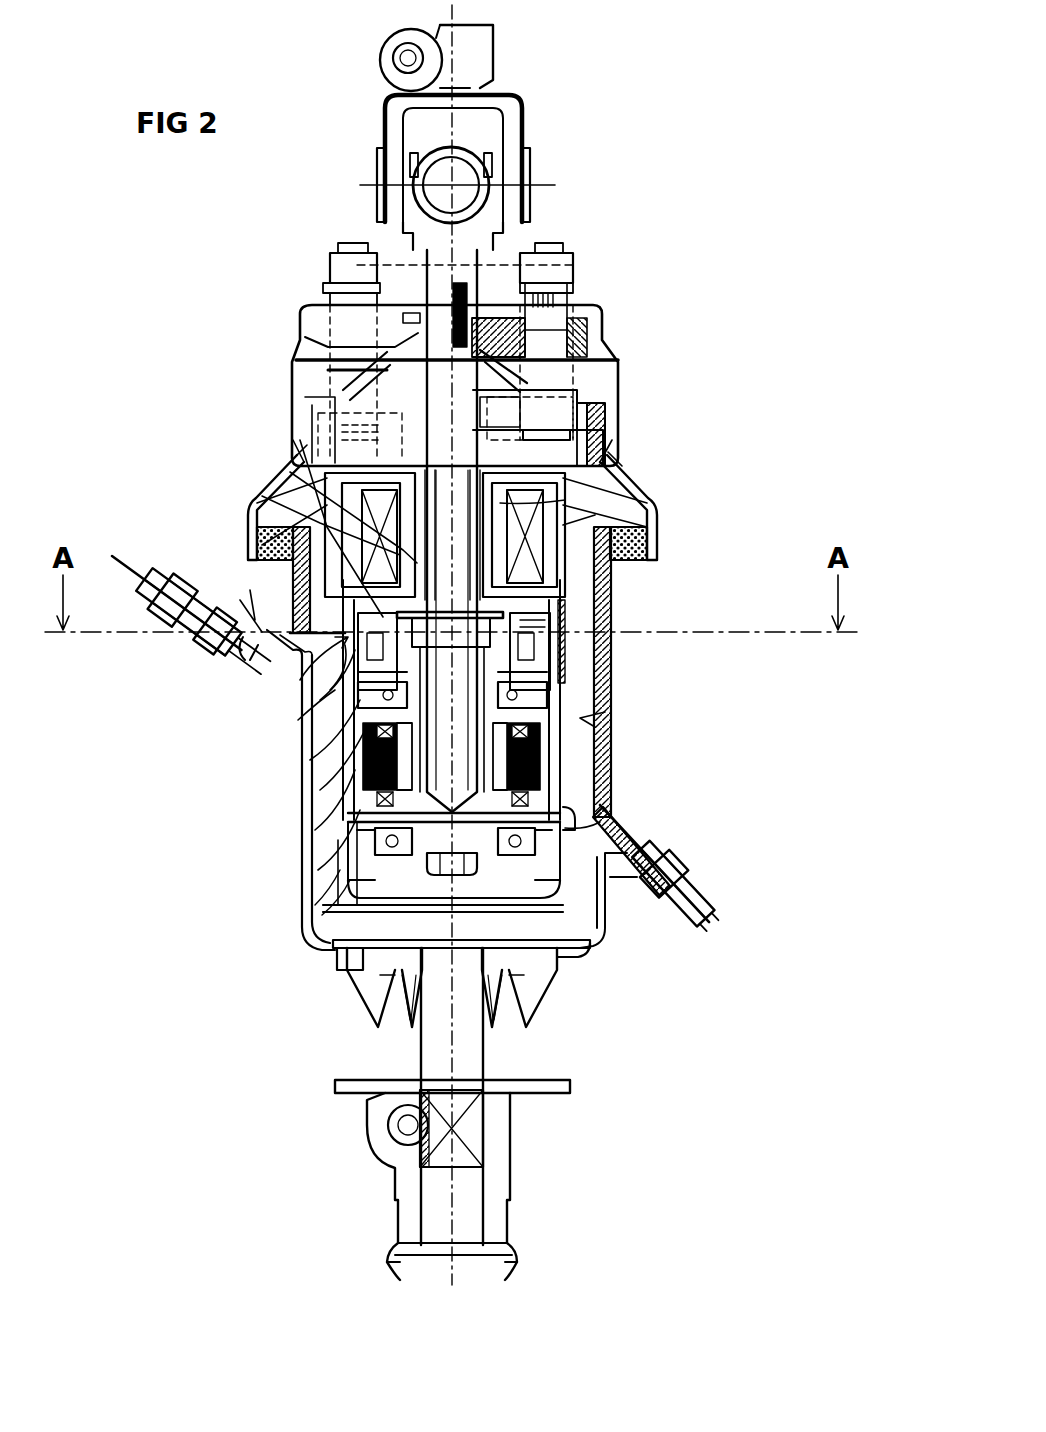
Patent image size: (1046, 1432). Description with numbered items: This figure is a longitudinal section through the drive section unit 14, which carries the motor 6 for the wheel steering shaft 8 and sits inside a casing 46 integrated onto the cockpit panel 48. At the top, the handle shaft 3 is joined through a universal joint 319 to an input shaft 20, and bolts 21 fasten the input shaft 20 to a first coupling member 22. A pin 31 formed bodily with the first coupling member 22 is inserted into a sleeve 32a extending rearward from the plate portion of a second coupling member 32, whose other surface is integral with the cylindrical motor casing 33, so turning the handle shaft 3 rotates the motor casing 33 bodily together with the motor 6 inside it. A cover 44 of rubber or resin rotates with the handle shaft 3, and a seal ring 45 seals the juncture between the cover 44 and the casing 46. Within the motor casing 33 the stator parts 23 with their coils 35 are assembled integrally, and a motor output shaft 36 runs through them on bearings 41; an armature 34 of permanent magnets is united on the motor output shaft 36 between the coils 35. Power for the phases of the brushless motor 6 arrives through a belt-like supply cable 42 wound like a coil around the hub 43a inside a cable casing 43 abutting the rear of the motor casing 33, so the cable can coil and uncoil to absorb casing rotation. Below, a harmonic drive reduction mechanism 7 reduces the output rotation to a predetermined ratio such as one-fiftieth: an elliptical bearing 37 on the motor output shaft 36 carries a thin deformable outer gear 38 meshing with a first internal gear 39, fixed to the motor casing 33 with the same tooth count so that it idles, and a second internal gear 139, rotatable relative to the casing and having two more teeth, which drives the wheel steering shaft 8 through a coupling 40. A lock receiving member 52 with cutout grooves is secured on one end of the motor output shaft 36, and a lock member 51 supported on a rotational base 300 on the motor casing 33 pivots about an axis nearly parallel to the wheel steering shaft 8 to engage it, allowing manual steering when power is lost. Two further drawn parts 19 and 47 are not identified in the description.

The handle shaft 3 is at (478, 72).
The universal joint 319 is at (490, 178).
The input shaft 20 is at (488, 252).
The bolts 21 is at (540, 320).
The first coupling member 22 is at (598, 398).
The drive section unit 14 is at (212, 398).
The sleeve 32a is at (300, 440).
The supply cable 42 is at (290, 472).
The cable casing 43 is at (612, 447).
The hub 43a is at (262, 496).
The cover 44 is at (608, 452).
The pin 31 is at (565, 500).
The second coupling member 32 is at (595, 515).
The lock member 51 is at (262, 538).
The seal ring 45 is at (650, 545).
The lock receiving member 52 is at (612, 580).
The casing 46 is at (612, 662).
The lead wire 19 is at (290, 675).
The rotational base 300 is at (330, 690).
The motor casing 33 is at (298, 720).
The bearings 41 is at (340, 752).
The stator parts 23 is at (610, 712).
The motor 6 is at (612, 732).
The armature 34 is at (612, 763).
The coils 35 is at (360, 788).
The outer gear 38 is at (610, 820).
The first internal gear 39 is at (345, 822).
The bearing holder 47 is at (345, 858).
The reduction mechanism 7 is at (345, 888).
The second internal gear 139 is at (315, 905).
The motor output shaft 36 is at (607, 930).
The elliptical bearing 37 is at (330, 945).
The coupling 40 is at (570, 958).
The wheel steering shaft 8 is at (485, 1058).
The cockpit panel 48 is at (703, 907).